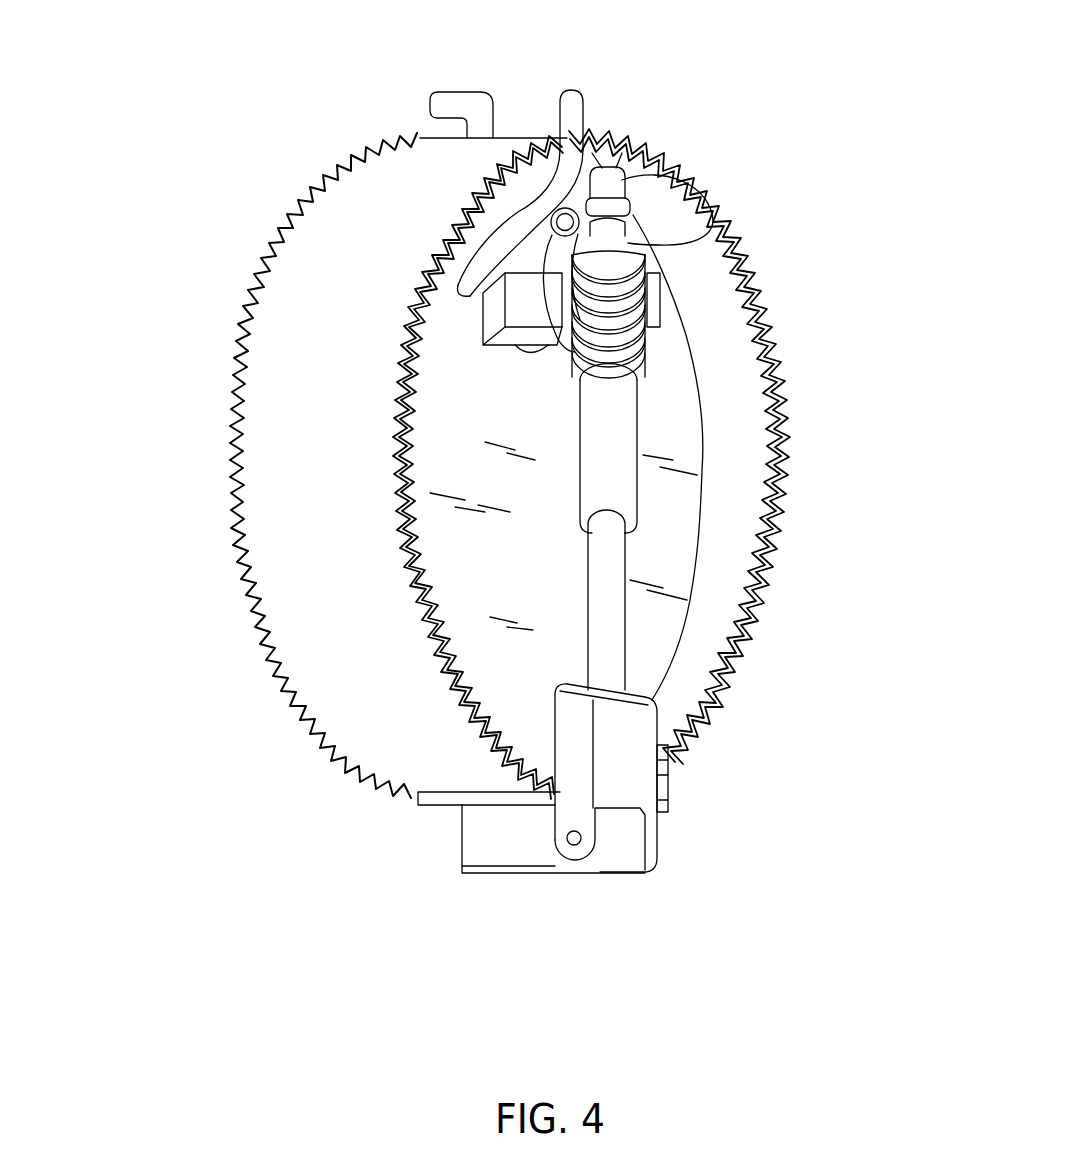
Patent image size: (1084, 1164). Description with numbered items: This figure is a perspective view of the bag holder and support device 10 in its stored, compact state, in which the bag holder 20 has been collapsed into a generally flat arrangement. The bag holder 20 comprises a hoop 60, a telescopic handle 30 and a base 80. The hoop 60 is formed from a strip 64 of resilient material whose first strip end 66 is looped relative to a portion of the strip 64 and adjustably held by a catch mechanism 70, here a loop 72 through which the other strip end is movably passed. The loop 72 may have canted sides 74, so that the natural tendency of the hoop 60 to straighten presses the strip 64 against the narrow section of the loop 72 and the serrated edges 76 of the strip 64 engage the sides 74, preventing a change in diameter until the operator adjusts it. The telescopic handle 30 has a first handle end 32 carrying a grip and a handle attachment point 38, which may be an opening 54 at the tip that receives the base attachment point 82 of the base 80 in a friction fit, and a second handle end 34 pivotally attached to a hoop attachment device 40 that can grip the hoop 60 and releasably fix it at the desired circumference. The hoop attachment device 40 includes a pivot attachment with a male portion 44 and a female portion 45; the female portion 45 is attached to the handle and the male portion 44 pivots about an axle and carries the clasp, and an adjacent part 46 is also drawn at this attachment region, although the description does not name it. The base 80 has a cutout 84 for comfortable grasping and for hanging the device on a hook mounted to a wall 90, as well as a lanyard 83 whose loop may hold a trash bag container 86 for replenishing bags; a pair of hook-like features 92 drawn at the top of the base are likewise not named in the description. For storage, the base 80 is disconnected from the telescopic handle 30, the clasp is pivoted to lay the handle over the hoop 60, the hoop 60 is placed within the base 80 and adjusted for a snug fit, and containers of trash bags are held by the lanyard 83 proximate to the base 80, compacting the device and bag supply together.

The bag holder and support device 10 is at (183, 482).
The bag holder 20 is at (200, 527).
The telescopic handle 30 is at (613, 623).
The first handle end 32 is at (607, 167).
The second handle end 34 is at (633, 693).
The handle attachment point 38 is at (643, 172).
The hoop attachment device 40 is at (683, 817).
The male portion 44 is at (622, 875).
The female portion 45 is at (660, 842).
The base plate 46 is at (572, 793).
The opening 54 is at (715, 225).
The hoop 60 is at (310, 650).
The strip 64 is at (297, 588).
The first strip end 66 is at (667, 792).
The catch mechanism 70 is at (667, 803).
The loop 72 is at (367, 733).
The canted sides 74 is at (667, 770).
The serrated edges 76 is at (413, 337).
The base 80 is at (663, 400).
The base attachment point 82 is at (683, 185).
The lanyard 83 is at (548, 345).
The cutout 84 is at (470, 217).
The trash bag container 86 is at (482, 342).
The wall 90 is at (823, 230).
The hooks 92 is at (443, 100).